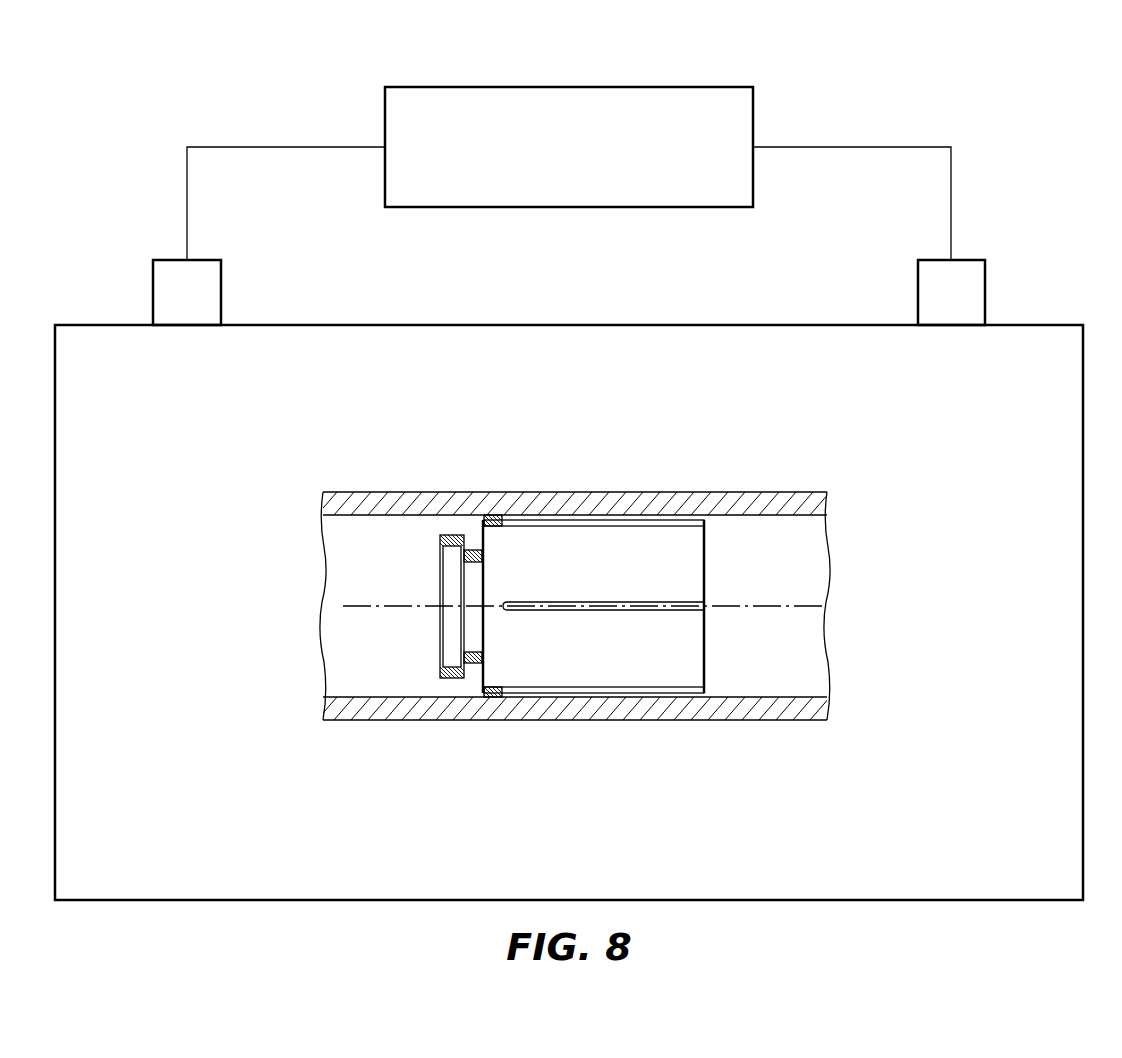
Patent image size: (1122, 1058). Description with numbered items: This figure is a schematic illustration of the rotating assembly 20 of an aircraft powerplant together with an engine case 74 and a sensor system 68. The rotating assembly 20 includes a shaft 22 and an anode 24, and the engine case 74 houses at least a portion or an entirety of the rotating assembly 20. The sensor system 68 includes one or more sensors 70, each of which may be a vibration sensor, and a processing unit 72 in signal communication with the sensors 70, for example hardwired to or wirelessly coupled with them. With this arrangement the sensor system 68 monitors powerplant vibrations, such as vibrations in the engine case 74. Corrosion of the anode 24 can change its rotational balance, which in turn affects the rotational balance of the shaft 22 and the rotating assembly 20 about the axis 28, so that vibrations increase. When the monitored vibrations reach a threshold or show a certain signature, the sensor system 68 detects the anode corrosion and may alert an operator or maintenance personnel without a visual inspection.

The sensor system 68 is at (842, 94).
The processing unit 72 is at (556, 173).
The sensor 70 is at (175, 305).
The engine case 74 is at (1036, 325).
The rotating assembly 20 is at (817, 477).
The shaft 22 is at (344, 727).
The anode 24 is at (432, 664).
The axis 28 is at (343, 607).